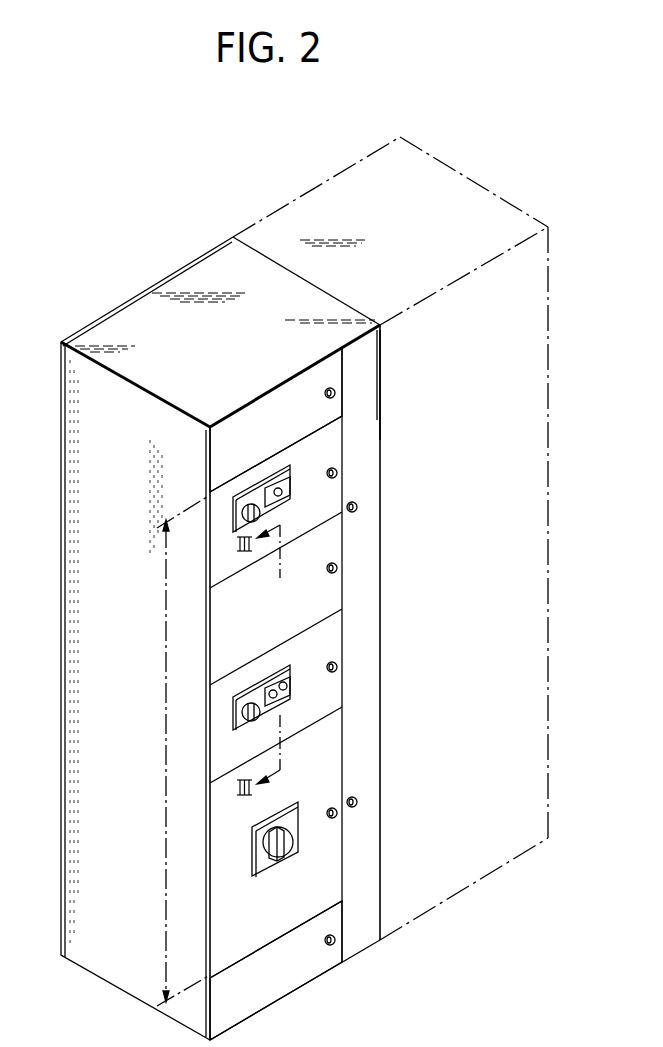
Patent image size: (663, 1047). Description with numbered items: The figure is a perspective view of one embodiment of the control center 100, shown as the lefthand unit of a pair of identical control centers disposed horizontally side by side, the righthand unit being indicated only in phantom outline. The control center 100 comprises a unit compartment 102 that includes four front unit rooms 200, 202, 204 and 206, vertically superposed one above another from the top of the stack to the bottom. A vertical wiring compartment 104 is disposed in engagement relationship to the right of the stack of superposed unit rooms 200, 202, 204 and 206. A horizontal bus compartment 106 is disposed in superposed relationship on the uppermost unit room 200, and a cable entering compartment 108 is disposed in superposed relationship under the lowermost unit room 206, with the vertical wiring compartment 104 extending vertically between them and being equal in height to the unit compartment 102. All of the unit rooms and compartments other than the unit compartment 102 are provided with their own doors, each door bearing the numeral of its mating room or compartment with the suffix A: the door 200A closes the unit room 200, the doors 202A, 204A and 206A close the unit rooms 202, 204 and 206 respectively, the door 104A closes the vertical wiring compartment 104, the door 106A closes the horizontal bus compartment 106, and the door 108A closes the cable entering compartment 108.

The control center 100 is at (507, 928).
The unit compartment 102 is at (162, 738).
The vertical wiring compartment 104 is at (377, 643).
The door for the vertical wiring compartment 104A is at (373, 384).
The horizontal bus compartment 106 is at (291, 433).
The door for the horizontal bus compartment 106A is at (290, 392).
The cable entering compartment 108 is at (297, 988).
The door for the cable entering compartment 108A is at (333, 918).
The unit room 200 is at (335, 516).
The door for the unit room 200A is at (333, 452).
The unit room 202 is at (335, 611).
The door for the unit room 202A is at (328, 549).
The unit room 204 is at (337, 710).
The door for the unit room 204A is at (328, 653).
The unit room 206 is at (335, 903).
The door for the unit room 206A is at (328, 756).